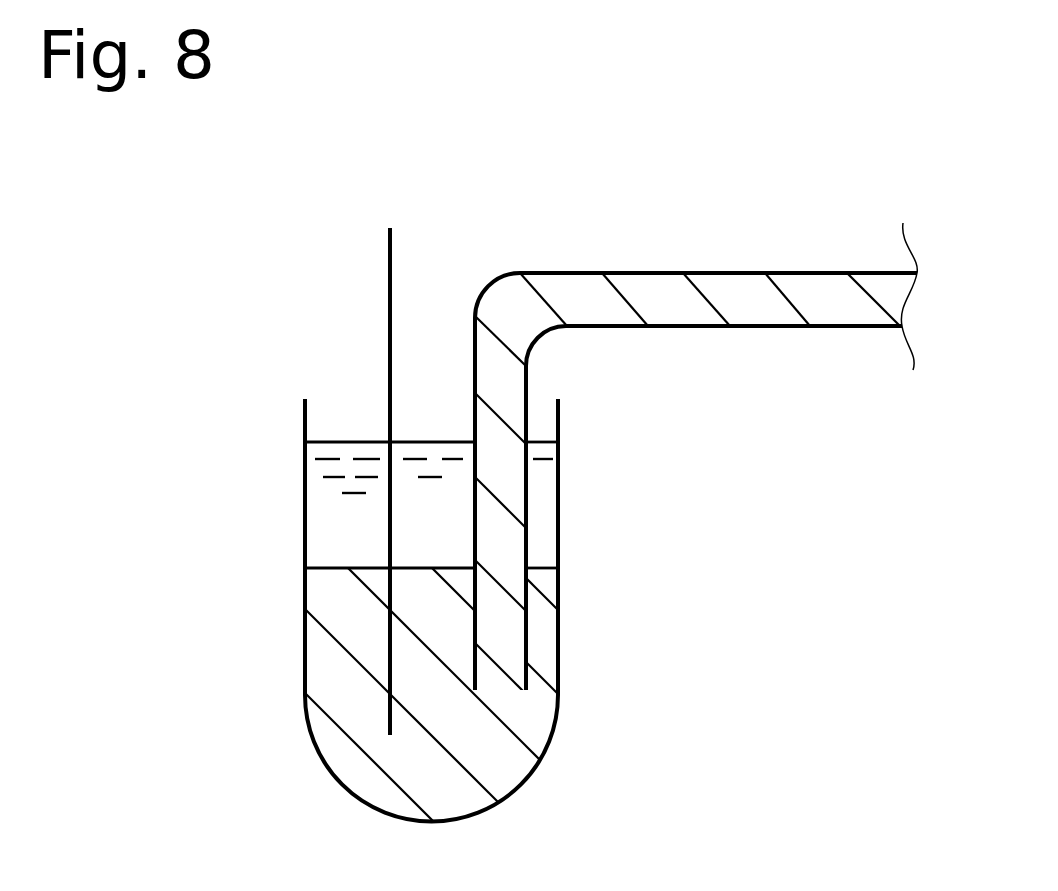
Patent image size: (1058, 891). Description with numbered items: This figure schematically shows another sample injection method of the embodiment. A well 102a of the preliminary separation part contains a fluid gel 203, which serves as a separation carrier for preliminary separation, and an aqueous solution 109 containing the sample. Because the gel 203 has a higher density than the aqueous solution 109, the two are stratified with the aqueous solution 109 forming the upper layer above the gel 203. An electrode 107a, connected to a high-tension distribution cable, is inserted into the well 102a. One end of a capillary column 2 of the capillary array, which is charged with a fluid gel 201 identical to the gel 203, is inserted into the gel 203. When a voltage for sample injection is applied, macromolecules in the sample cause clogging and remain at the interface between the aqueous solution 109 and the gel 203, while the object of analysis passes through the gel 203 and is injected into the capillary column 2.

The capillary column 2 is at (610, 273).
The fluid gel 201 is at (727, 326).
The aqueous solution 109 is at (325, 528).
The well 102a is at (558, 543).
The electrode 107a is at (388, 632).
The fluid gel 203 is at (325, 695).